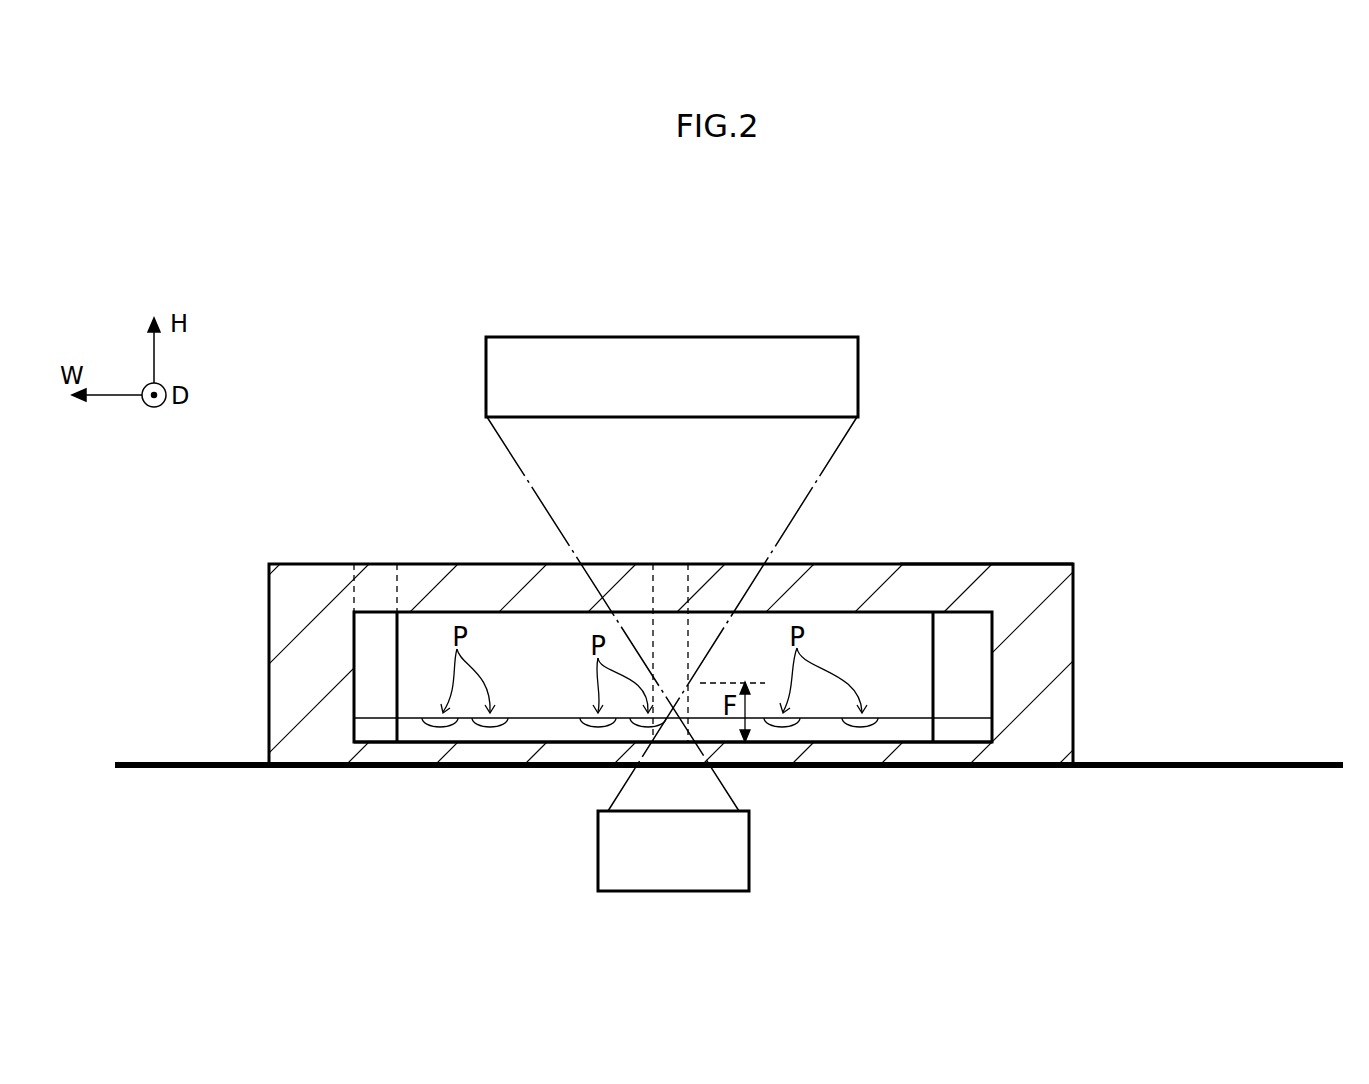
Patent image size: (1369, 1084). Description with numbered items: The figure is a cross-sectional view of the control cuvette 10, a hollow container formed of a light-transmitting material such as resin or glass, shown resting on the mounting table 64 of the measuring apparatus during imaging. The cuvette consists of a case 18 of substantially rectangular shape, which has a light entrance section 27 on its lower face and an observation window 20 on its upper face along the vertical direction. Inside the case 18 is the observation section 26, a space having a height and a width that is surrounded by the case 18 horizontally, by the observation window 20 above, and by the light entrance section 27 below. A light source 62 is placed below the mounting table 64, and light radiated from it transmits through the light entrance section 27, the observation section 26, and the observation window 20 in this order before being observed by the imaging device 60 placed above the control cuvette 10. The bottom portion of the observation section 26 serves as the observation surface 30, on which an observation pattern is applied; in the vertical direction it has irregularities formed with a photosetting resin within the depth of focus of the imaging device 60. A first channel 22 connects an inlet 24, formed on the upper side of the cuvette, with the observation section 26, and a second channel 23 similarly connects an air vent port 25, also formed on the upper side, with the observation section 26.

The control cuvette 10 is at (1074, 586).
The case 18 is at (1018, 562).
The observation window 20 is at (890, 562).
The first channel 22 is at (966, 673).
The second channel 23 is at (377, 676).
The inlet 24 is at (688, 583).
The air vent port 25 is at (358, 583).
The observation section 26 is at (408, 646).
The light entrance section 27 is at (398, 753).
The observation surface 30 is at (898, 722).
The imaging device 60 is at (859, 372).
The light source 62 is at (750, 851).
The mounting table 64 is at (1262, 760).